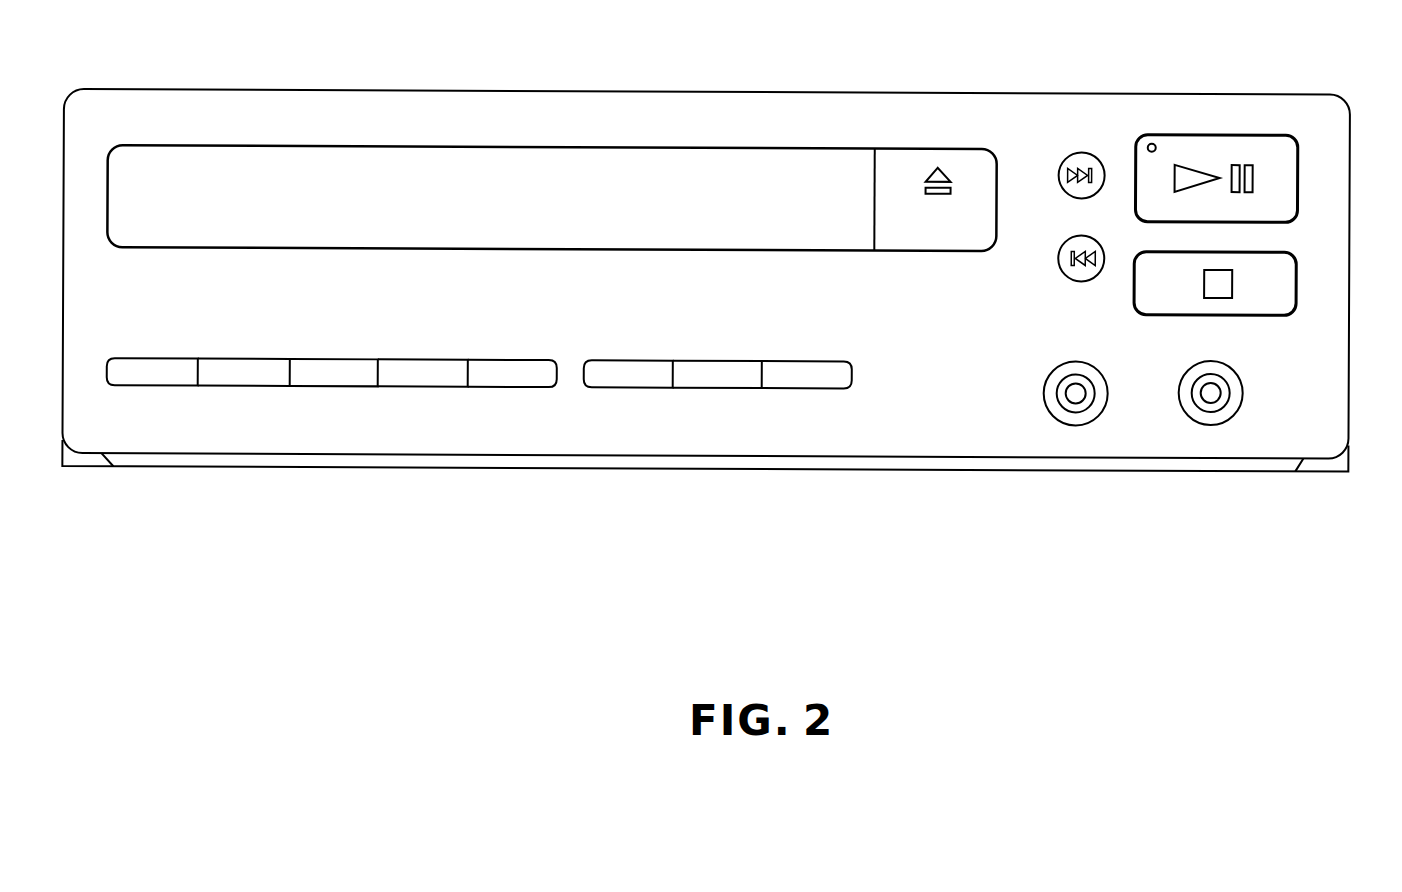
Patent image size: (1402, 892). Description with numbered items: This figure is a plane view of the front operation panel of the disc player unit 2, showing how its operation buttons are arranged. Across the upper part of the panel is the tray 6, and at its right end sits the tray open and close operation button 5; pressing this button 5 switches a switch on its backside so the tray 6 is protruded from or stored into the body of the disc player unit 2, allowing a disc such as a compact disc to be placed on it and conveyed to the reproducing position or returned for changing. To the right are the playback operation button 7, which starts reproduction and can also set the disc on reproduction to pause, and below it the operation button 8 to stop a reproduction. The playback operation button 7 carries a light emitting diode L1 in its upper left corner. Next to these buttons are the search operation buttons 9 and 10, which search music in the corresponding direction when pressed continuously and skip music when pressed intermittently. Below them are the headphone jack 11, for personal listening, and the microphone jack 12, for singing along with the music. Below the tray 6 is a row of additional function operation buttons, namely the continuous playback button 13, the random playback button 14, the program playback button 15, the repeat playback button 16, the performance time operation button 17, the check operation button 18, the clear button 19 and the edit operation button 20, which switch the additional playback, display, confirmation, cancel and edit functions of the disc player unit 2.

The disc player unit 2 is at (1118, 557).
The tray open and close operation button 5 is at (965, 145).
The tray 6 is at (843, 145).
The playback operation button 7 is at (1298, 170).
The operation button to stop a reproduction 8 is at (1297, 286).
The search operation button 9 is at (1064, 190).
The search operation button 10 is at (1066, 270).
The headphone jack 11 is at (1225, 420).
The microphone jack 12 is at (1080, 421).
The continuous playback button 13 is at (163, 385).
The random playback button 14 is at (263, 385).
The program playback button 15 is at (358, 385).
The repeat playback button 16 is at (448, 385).
The performance time operation button 17 is at (535, 385).
The check operation button 18 is at (655, 385).
The clear button 19 is at (738, 385).
The edit operation button 20 is at (830, 385).
The light emitting diode L1 is at (1153, 138).